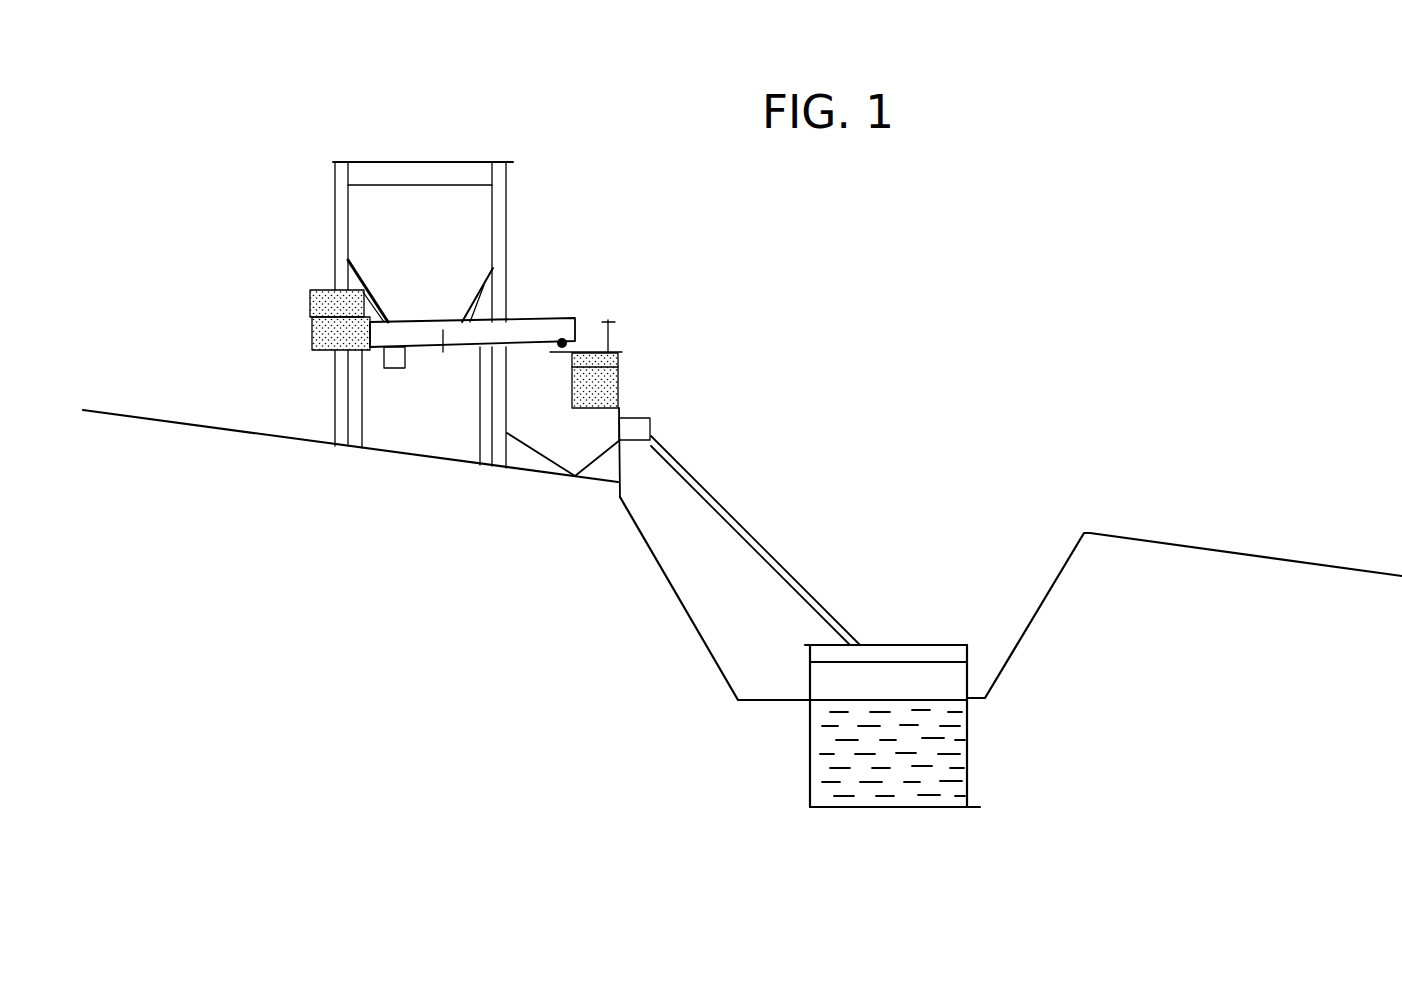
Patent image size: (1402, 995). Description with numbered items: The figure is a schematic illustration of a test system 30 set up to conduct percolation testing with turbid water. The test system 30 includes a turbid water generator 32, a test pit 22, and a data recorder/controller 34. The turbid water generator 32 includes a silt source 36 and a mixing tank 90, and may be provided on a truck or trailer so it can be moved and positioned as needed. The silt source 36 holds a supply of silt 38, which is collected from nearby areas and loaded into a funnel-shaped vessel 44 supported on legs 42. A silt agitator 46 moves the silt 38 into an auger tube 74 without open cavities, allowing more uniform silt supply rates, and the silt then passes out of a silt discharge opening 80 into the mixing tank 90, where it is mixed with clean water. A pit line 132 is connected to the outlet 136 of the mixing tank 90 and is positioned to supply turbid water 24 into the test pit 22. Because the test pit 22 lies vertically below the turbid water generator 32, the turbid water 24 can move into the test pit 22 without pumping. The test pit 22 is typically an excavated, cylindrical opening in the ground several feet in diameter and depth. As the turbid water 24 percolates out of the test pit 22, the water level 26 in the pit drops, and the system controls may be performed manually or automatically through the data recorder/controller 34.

The test system 30 is at (720, 305).
The silt source 36 is at (317, 197).
The silt 38 is at (393, 218).
The vessel 44 is at (493, 318).
The silt agitator 46 is at (302, 302).
The legs 42 is at (348, 388).
The turbid water generator 32 is at (600, 281).
The auger tube 74 is at (443, 333).
The silt discharge opening 80 is at (554, 346).
The data recorder/controller 34 is at (603, 388).
The outlet 136 is at (638, 413).
The pit line 132 is at (760, 535).
The mixing tank 90 is at (549, 442).
The test pit 22 is at (839, 753).
The water level 26 is at (850, 700).
The turbid water 24 is at (920, 757).